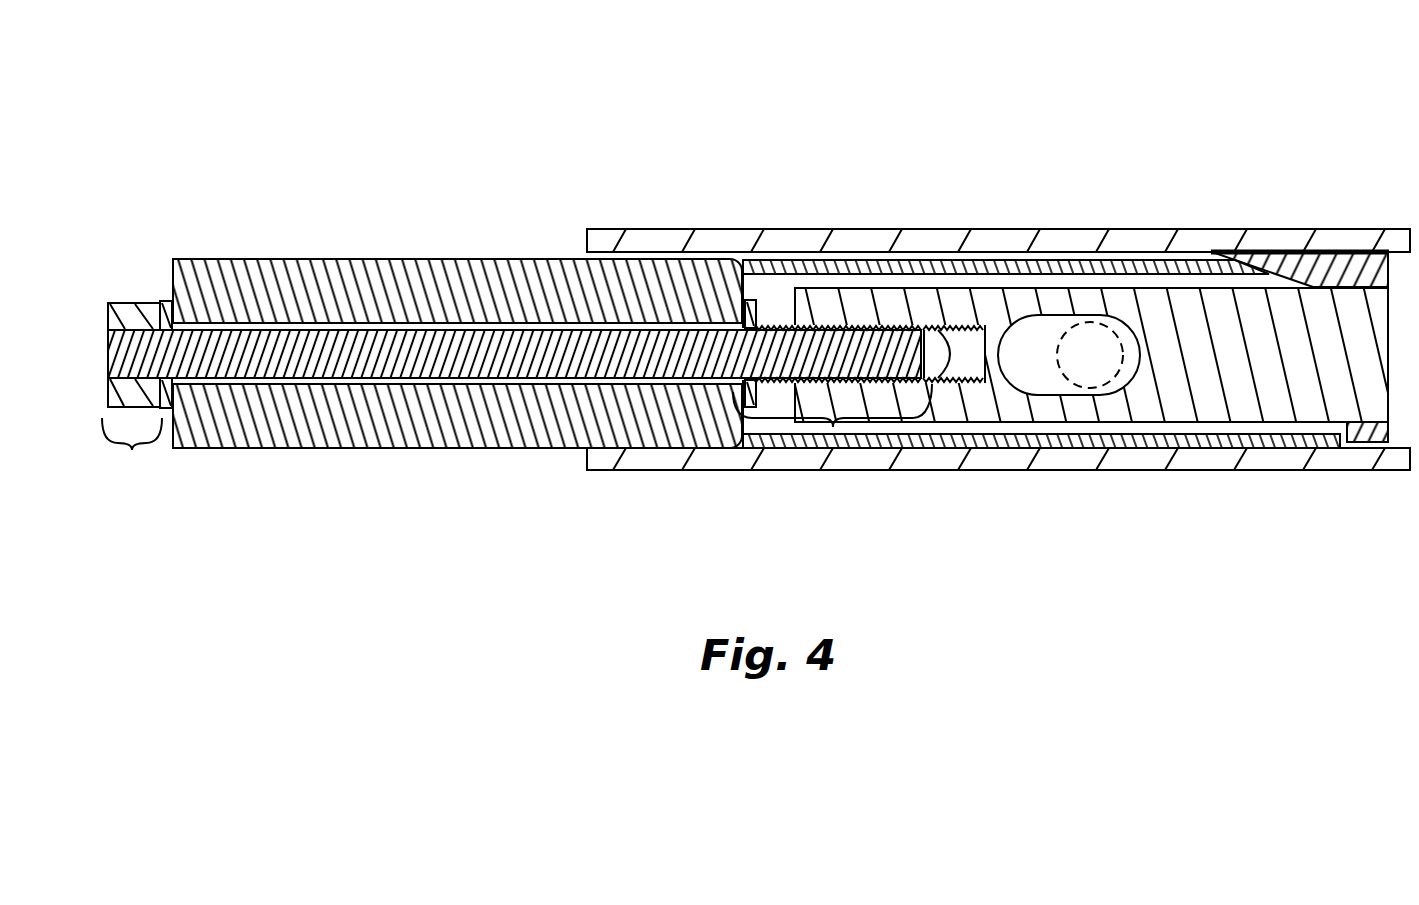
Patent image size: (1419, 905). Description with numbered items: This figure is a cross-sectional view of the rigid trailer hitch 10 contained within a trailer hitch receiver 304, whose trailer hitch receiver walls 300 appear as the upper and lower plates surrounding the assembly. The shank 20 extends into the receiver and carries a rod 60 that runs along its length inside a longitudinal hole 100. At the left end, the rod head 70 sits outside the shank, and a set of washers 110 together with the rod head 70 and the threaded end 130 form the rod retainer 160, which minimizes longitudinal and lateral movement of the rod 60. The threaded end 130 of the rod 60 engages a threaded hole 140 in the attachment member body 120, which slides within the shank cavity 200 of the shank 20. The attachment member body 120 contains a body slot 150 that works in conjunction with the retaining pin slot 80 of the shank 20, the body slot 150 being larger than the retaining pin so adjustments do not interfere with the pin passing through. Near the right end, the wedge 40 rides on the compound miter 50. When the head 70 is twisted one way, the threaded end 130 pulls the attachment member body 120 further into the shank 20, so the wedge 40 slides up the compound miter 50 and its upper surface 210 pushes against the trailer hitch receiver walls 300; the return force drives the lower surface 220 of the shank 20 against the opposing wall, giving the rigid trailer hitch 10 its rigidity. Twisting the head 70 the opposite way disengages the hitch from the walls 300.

The rigid trailer hitch attachment 10 is at (756, 306).
The shank 20 is at (497, 260).
The wedge 40 is at (1320, 277).
The compound miter 50 is at (1262, 250).
The rod 60 is at (309, 352).
The rod head 70 is at (133, 302).
The retaining pin slot 80 is at (1090, 337).
The longitudinal hole 100 is at (222, 382).
The washers 110 is at (170, 300).
The attachment member body 120 is at (1190, 370).
The threaded end 130 is at (840, 347).
The threaded hole 140 is at (907, 337).
The body slot 150 is at (1028, 342).
The rod retainer 160 is at (132, 450).
The shank cavity 200 is at (778, 300).
The upper surface 210 is at (1372, 245).
The lower surface 220 is at (1337, 448).
The trailer hitch receiver walls 300 is at (1200, 243).
The trailer hitch receiver 304 is at (607, 250).